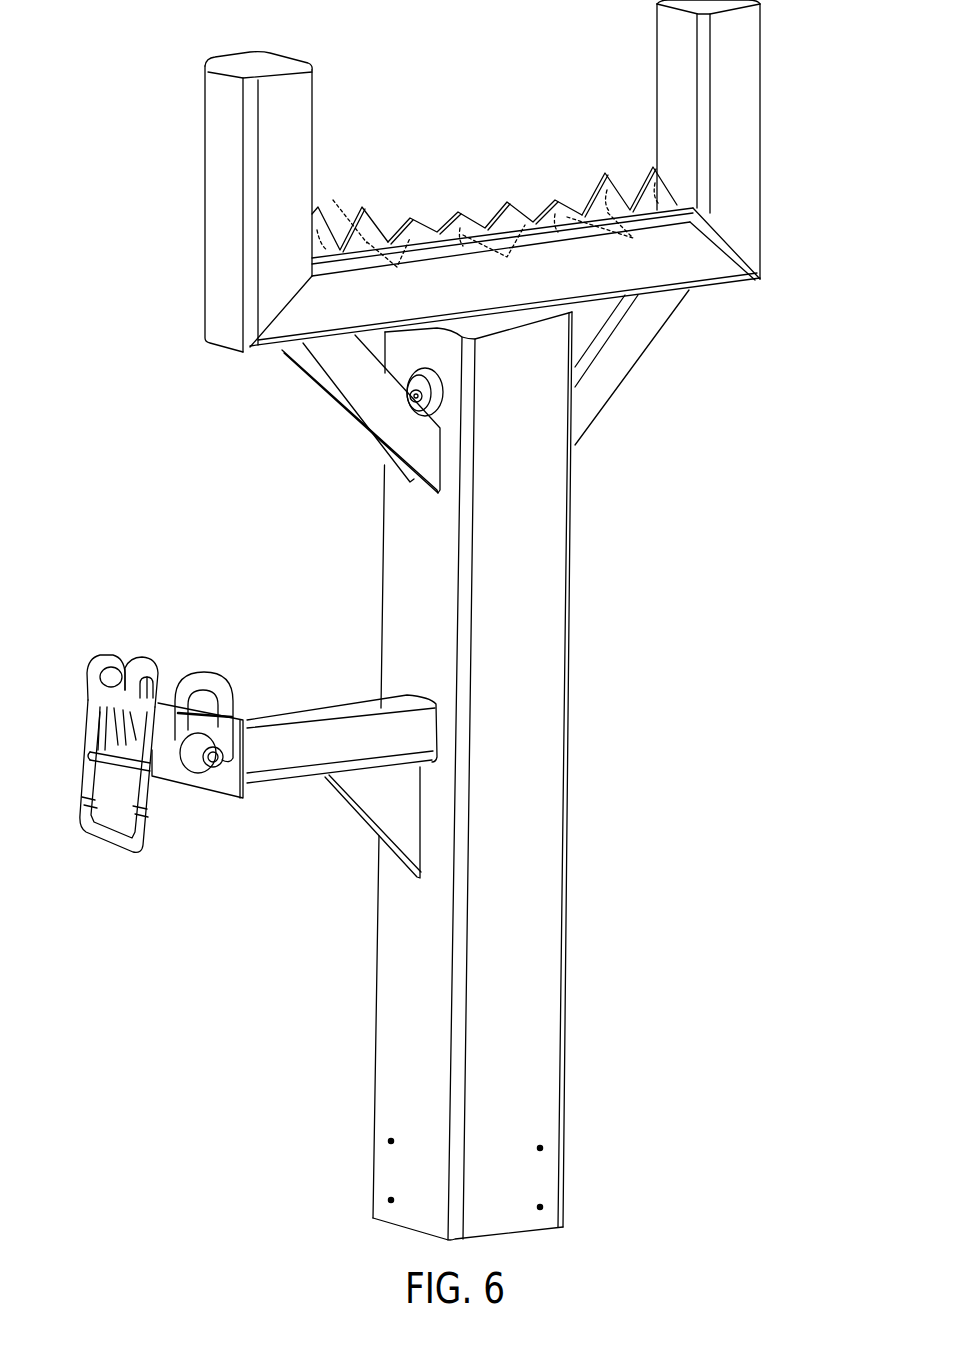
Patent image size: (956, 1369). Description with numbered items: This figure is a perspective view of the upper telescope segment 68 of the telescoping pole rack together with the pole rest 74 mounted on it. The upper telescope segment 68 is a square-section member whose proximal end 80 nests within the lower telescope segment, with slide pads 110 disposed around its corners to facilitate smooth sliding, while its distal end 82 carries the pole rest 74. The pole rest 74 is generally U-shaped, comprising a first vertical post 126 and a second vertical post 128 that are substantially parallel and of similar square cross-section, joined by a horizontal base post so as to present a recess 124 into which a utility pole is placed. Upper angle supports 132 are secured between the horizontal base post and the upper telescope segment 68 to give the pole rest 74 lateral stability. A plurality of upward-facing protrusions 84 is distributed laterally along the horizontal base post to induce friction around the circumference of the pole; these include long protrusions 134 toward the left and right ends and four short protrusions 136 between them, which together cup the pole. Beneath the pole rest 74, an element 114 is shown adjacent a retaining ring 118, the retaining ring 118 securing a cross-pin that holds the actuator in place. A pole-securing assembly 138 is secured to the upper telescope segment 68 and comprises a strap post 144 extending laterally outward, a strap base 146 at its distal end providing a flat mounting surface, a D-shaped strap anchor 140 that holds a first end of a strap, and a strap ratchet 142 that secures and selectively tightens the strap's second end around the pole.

The upper telescope segment 68 is at (123, 491).
The pole rest 74 is at (163, 107).
The proximal end 80 is at (613, 1140).
The distal end 82 is at (584, 500).
The protrusions 84 is at (488, 244).
The slide pad 110 is at (398, 1174).
The pulley 114 is at (403, 401).
The retaining ring 118 is at (380, 473).
The recess 124 is at (497, 102).
The first vertical post 126 is at (228, 82).
The second vertical post 128 is at (752, 73).
The upper angle support 132 is at (328, 388).
The long protrusions 134 is at (333, 200).
The short protrusions 136 is at (432, 210).
The pole-securing assembly 138 is at (160, 650).
The strap anchor 140 is at (203, 677).
The strap ratchet 142 is at (107, 653).
The strap post 144 is at (322, 738).
The strap base 146 is at (222, 787).